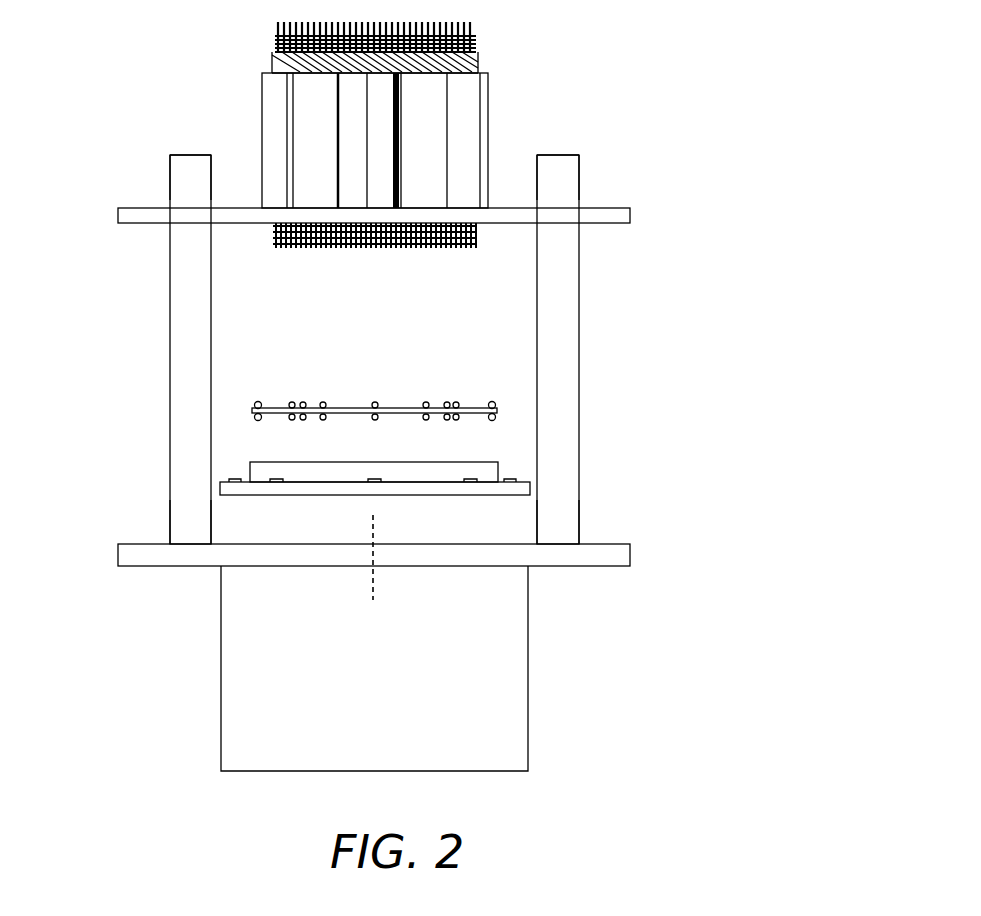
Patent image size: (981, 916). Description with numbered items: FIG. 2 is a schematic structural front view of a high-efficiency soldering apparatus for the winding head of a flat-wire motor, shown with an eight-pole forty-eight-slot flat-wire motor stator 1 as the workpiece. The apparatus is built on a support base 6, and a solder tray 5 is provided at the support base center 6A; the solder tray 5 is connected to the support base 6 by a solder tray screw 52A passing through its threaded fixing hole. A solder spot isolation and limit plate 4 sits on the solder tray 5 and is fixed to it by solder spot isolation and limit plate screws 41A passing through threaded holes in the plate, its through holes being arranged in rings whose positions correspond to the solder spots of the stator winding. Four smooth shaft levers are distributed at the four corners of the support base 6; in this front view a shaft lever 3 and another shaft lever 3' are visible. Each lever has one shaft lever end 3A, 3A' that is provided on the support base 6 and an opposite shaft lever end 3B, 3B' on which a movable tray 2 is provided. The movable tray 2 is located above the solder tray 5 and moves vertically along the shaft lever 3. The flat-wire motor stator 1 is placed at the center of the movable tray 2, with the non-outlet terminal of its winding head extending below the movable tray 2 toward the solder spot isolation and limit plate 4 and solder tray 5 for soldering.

The 8-pole 48-slot flat-wire motor stator 1 is at (420, 123).
The movable tray 2 is at (608, 217).
The shaft lever 3 is at (633, 349).
The shaft lever 3' is at (123, 349).
The shaft lever end 3A is at (601, 494).
The shaft lever end 3A' is at (126, 507).
The shaft lever end 3B is at (596, 150).
The shaft lever end 3B' is at (126, 150).
The solder spot isolation and limit plate 4 is at (417, 406).
The solder spot isolation and limit plate screw 41A is at (445, 375).
The solder tray 5 is at (398, 475).
The solder tray screw 52A is at (304, 446).
The support base 6 is at (588, 555).
The support base center 6A is at (534, 590).